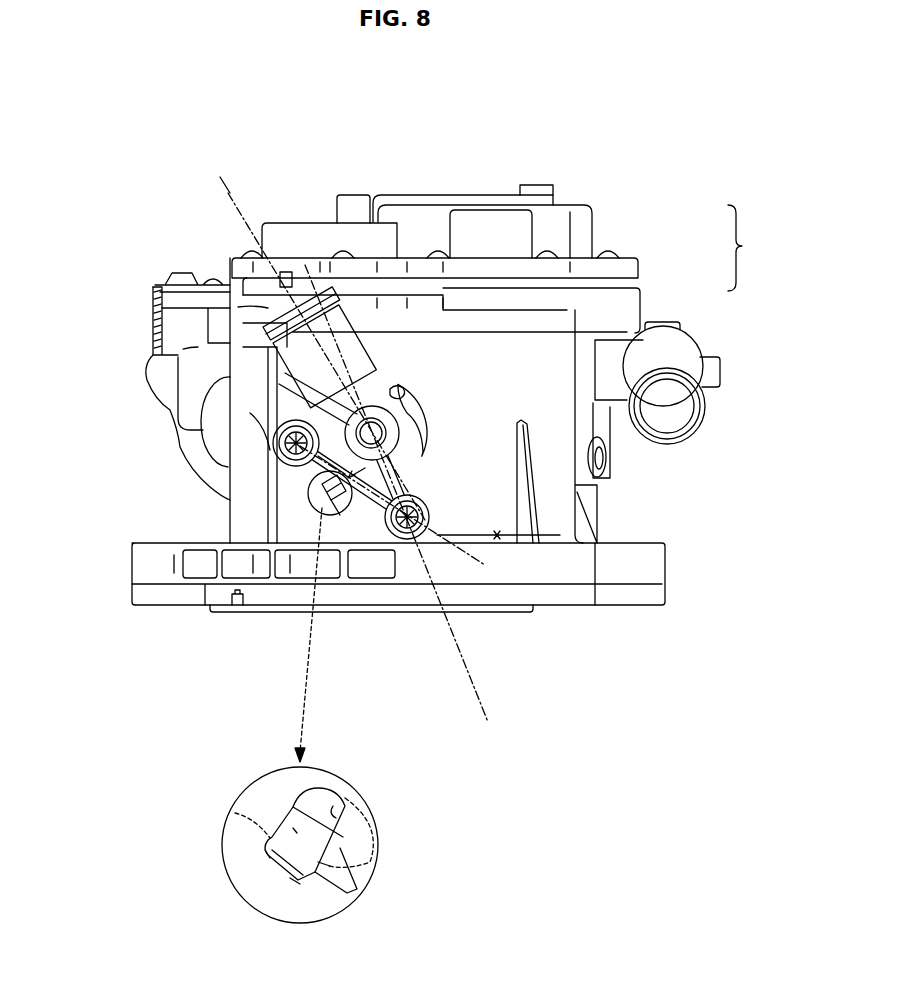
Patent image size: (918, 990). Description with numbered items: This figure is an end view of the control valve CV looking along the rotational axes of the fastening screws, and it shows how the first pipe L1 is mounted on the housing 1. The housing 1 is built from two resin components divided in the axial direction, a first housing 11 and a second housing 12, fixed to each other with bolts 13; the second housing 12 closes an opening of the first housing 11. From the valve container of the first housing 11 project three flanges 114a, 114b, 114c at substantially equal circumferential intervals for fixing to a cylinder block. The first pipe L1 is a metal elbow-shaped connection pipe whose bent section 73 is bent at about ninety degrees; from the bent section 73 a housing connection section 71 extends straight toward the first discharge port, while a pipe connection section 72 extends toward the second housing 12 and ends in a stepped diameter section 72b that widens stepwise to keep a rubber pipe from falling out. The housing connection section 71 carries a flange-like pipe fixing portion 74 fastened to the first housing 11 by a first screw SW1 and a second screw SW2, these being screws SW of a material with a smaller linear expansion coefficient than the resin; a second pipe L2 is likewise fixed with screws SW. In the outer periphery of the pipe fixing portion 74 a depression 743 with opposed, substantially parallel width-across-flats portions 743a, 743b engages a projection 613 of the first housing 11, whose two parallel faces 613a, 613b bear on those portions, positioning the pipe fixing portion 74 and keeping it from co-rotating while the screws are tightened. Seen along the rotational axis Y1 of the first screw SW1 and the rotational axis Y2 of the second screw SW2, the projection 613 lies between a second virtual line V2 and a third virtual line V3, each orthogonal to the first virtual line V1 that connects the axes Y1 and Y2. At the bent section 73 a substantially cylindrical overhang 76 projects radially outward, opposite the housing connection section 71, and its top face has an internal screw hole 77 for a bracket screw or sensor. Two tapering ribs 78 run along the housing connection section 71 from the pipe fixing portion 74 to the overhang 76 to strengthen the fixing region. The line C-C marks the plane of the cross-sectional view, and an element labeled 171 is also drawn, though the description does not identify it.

The housing 1 is at (746, 248).
The first housing 11 is at (560, 372).
The second housing 12 is at (615, 270).
The bolts 13 is at (346, 246).
The housing connection section 71 is at (345, 508).
The pipe connection section 72 is at (380, 330).
The stepped diameter section 72b is at (335, 290).
The bent section 73 is at (430, 430).
The pipe fixing portion 74 is at (402, 480).
The overhang 76 is at (413, 385).
The internal screw hole 77 is at (410, 410).
The ribs 78 is at (398, 466).
The flange 114a is at (650, 566).
The flange 114b is at (565, 585).
The flange 114c is at (150, 560).
The bracket 171 is at (215, 610).
The projection 613 is at (322, 506).
The face 613a is at (272, 827).
The face 613b is at (328, 865).
The depression 743 is at (335, 510).
The width-across-flats portion 743a is at (262, 872).
The width-across-flats portion 743b is at (292, 875).
The control valve CV is at (588, 188).
The first pipe L1 is at (302, 282).
The second pipe L2 is at (690, 370).
The line C- C is at (222, 187).
The first virtual line V1 is at (419, 509).
The second virtual line V2 is at (308, 365).
The third virtual line V3 is at (433, 477).
The rotational axis of first screw Y1 is at (275, 420).
The rotational axis of second screw Y2 is at (432, 518).
The screws SW is at (606, 454).
The first screw SW1 is at (272, 455).
The second screw SW2 is at (409, 541).